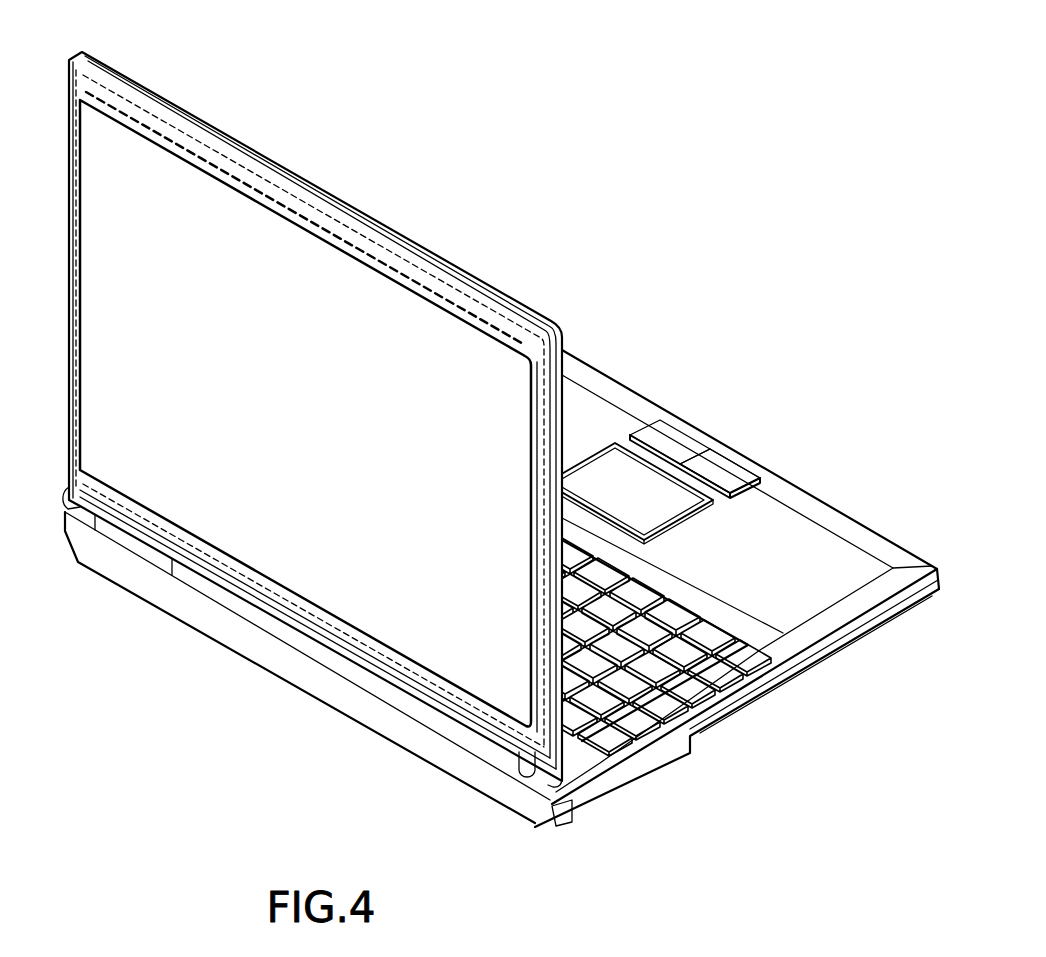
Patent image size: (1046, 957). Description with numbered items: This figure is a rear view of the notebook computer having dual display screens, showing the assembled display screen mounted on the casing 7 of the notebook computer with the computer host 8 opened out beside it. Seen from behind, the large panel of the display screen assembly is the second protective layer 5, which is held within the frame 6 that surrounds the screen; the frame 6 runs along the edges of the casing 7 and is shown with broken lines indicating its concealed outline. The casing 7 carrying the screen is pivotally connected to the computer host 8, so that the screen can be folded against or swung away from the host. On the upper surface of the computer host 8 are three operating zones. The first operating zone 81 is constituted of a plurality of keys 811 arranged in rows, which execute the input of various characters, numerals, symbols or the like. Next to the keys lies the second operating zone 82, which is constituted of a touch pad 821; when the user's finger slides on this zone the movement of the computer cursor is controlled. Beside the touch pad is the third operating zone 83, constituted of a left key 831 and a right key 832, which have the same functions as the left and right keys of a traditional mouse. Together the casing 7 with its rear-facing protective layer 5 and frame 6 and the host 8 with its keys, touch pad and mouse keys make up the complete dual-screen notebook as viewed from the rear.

The second protective layer 5 is at (293, 558).
The frame 6 is at (258, 176).
The casing 7 is at (177, 108).
The computer host 8 is at (850, 637).
The first operating zone 81 is at (743, 634).
The keys 811 is at (663, 673).
The second operating zone 82 is at (592, 468).
The touch pad 821 is at (618, 472).
The third operating zone 83 is at (748, 412).
The left key 831 is at (675, 433).
The right key 832 is at (725, 467).